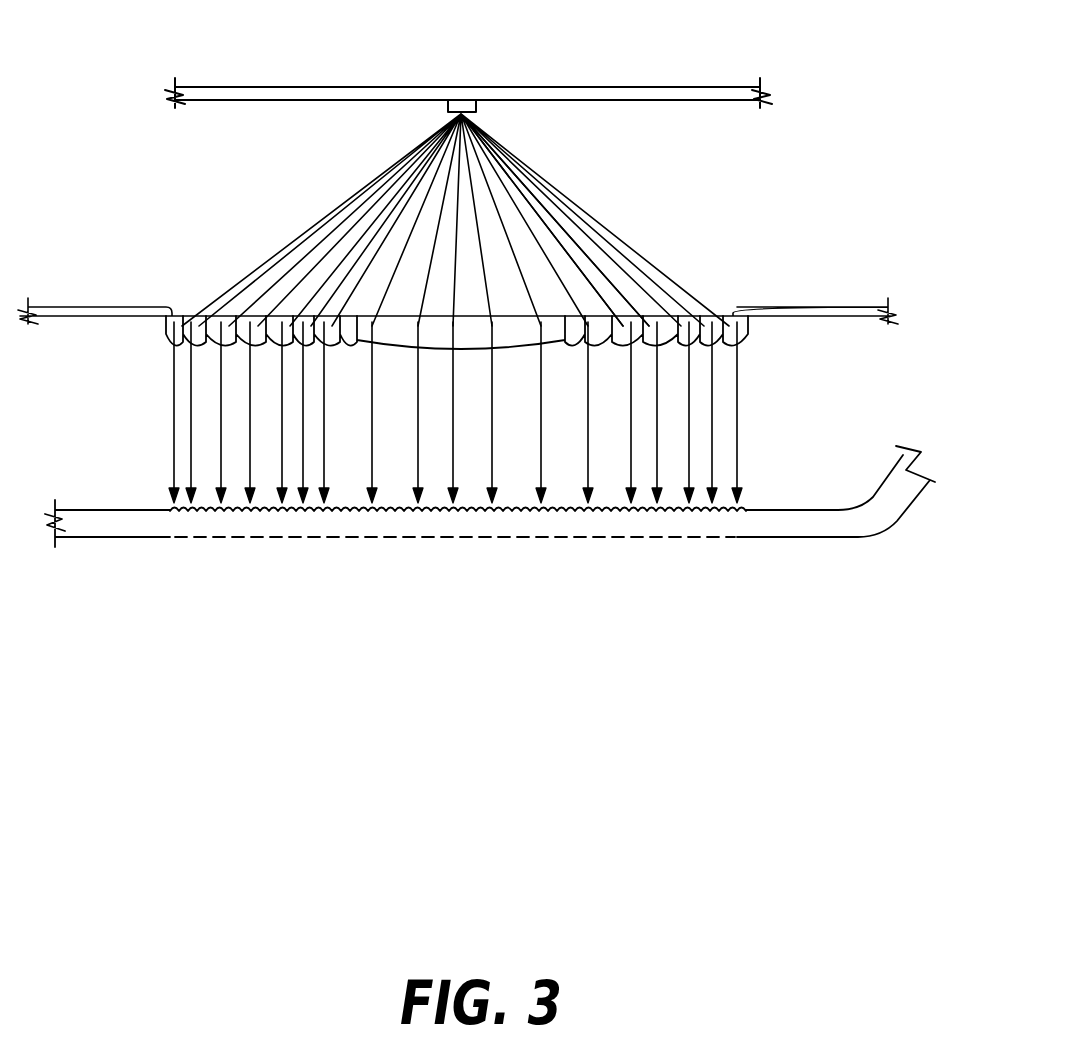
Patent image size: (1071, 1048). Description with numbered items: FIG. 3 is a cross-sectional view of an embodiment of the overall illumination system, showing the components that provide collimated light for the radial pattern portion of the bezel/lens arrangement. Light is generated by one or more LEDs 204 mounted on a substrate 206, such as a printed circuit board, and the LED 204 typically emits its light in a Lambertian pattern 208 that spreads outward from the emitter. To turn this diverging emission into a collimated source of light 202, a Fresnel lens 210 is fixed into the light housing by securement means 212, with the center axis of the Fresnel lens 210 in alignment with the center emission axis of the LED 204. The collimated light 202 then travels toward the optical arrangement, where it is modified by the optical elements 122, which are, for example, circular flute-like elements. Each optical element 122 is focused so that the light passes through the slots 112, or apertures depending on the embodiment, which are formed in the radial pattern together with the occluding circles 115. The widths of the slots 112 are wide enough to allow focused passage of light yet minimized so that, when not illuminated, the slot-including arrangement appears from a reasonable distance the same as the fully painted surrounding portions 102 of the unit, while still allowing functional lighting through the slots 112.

The surrounding portions 102 is at (128, 527).
The slots 112 is at (298, 538).
The occluding circles 115 is at (345, 538).
The optical elements 122 is at (508, 512).
The collimated source of light 202 is at (657, 438).
The LED 204 is at (468, 100).
The substrate 206 is at (600, 108).
The Lambertian pattern 208 is at (625, 214).
The Fresnel lens 210 is at (405, 338).
The securement means 212 is at (130, 305).